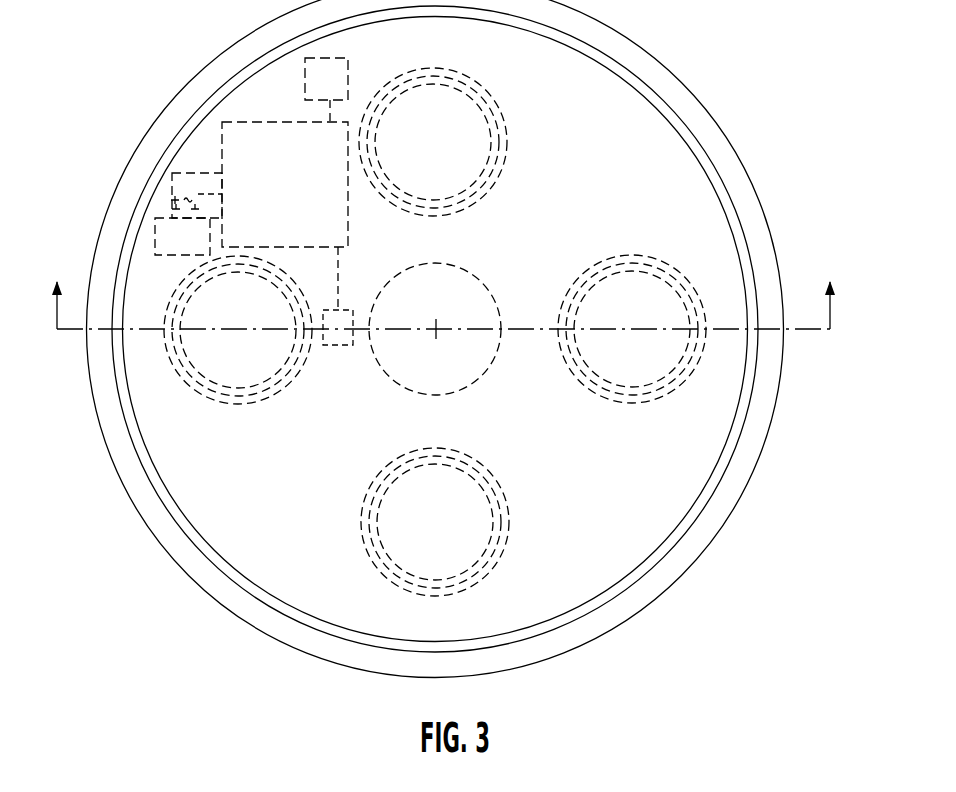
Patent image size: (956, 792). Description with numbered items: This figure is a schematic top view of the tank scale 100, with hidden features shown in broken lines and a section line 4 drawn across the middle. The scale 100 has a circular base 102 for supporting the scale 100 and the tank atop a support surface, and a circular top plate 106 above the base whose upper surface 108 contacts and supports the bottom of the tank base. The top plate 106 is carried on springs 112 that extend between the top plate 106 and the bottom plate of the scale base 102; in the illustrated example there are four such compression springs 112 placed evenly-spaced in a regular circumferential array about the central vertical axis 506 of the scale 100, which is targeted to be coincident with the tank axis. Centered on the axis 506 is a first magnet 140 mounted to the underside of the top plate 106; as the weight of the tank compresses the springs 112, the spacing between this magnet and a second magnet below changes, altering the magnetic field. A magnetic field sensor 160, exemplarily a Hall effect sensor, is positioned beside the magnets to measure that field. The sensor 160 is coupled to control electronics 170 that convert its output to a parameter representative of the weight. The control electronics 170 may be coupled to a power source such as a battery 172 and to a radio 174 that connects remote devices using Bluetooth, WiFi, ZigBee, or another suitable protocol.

The scale 100 is at (471, 339).
The base 102 is at (772, 183).
The top plate 106 is at (650, 174).
The upper surface 108 is at (622, 116).
The springs 112 is at (517, 148).
The first magnet 140 is at (485, 311).
The magnetic field sensor 160 is at (335, 346).
The control electronics 170 is at (252, 163).
The battery 172 is at (172, 238).
The radio 174 is at (312, 78).
The central vertical axis 506 is at (436, 326).
The section line 4- 4 is at (442, 293).